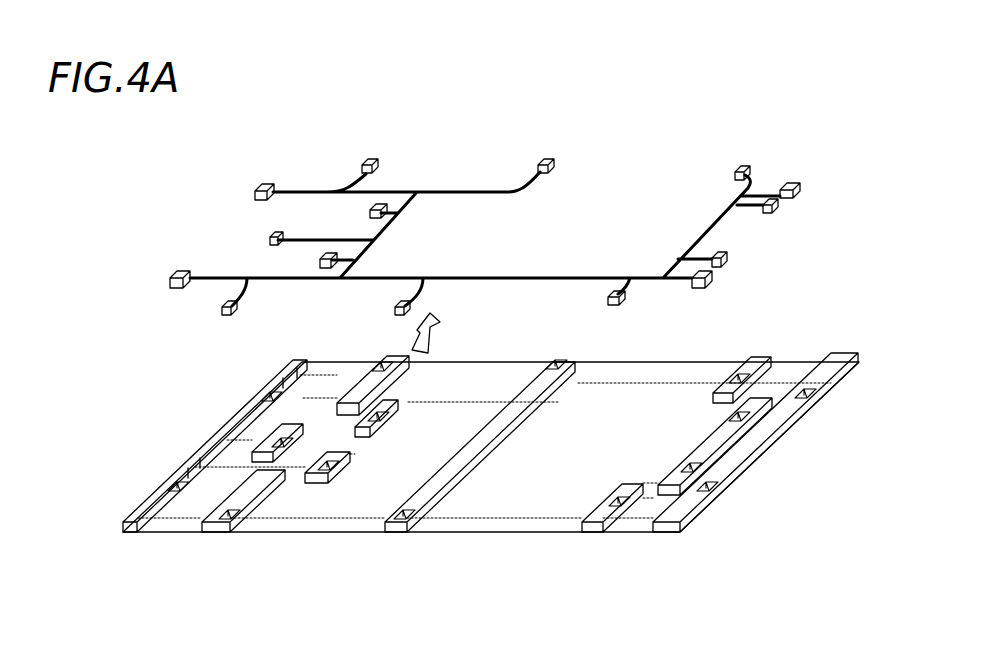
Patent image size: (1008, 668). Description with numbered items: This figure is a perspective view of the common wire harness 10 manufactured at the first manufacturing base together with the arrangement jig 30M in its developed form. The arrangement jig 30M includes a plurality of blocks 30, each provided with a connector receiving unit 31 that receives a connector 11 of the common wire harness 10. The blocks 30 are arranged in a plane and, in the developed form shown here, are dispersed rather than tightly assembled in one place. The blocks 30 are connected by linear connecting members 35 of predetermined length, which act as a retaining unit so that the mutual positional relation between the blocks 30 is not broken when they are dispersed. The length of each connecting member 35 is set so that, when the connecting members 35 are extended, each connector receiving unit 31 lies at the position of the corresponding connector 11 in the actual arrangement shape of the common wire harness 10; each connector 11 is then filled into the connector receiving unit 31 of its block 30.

The common wire harness 10 is at (490, 192).
The connector 11 is at (554, 166).
The block 30 is at (522, 392).
The arrangement jig 30M is at (715, 348).
The connector receiving unit 31 is at (566, 365).
The linear connecting member 35 is at (336, 399).